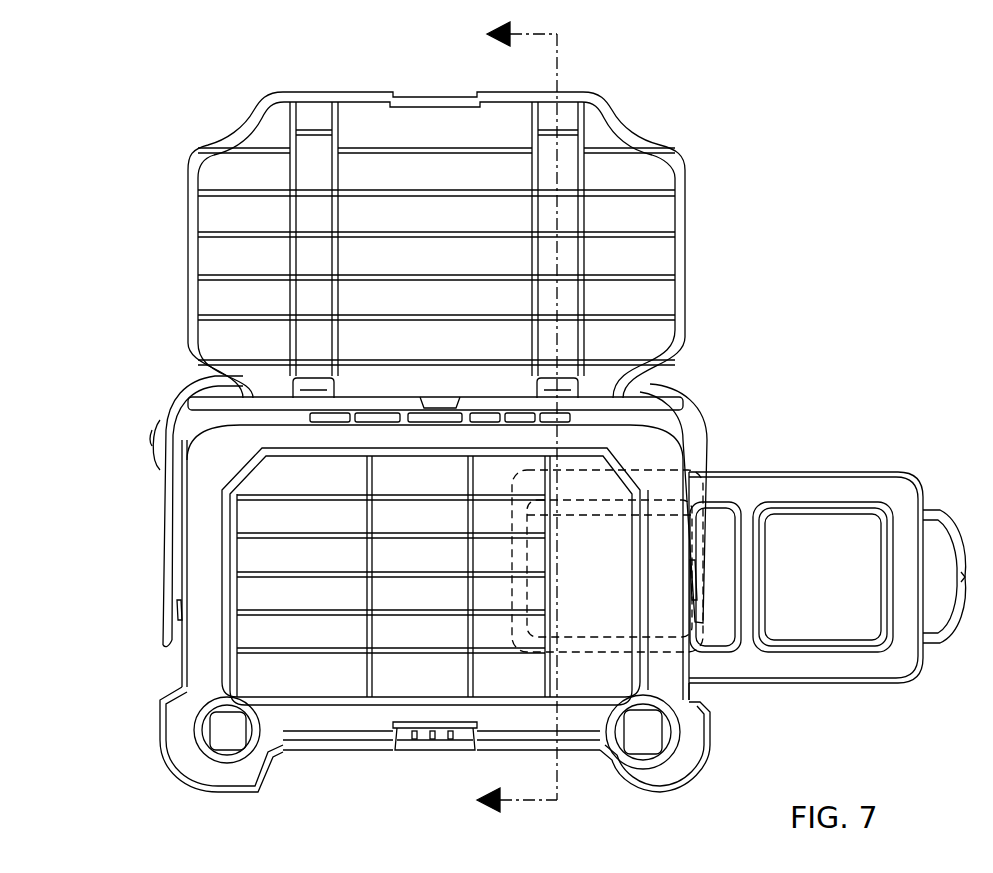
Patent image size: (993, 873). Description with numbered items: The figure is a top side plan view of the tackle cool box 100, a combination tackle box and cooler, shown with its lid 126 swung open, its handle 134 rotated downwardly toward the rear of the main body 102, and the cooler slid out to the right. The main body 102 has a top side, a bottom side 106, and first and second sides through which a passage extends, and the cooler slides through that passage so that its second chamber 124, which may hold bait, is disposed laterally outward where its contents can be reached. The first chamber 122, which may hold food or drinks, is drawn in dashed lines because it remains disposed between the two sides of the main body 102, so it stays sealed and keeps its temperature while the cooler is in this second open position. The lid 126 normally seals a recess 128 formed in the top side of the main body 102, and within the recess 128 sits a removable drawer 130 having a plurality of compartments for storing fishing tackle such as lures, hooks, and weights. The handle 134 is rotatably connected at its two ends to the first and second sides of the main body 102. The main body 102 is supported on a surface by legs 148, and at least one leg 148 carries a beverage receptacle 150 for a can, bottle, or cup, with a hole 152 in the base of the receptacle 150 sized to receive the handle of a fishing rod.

The tackle cool box 100 is at (805, 196).
The main body 102 is at (182, 673).
The bottom side 106 is at (858, 683).
The first chamber 122 is at (595, 588).
The second chamber 124 is at (826, 578).
The lid 126 is at (283, 92).
The recess 128 is at (252, 628).
The removable drawer 130 is at (280, 543).
The handle 134 is at (165, 458).
The legs 148 is at (670, 795).
The beverage receptacle 150 is at (680, 735).
The hole 152 is at (610, 795).